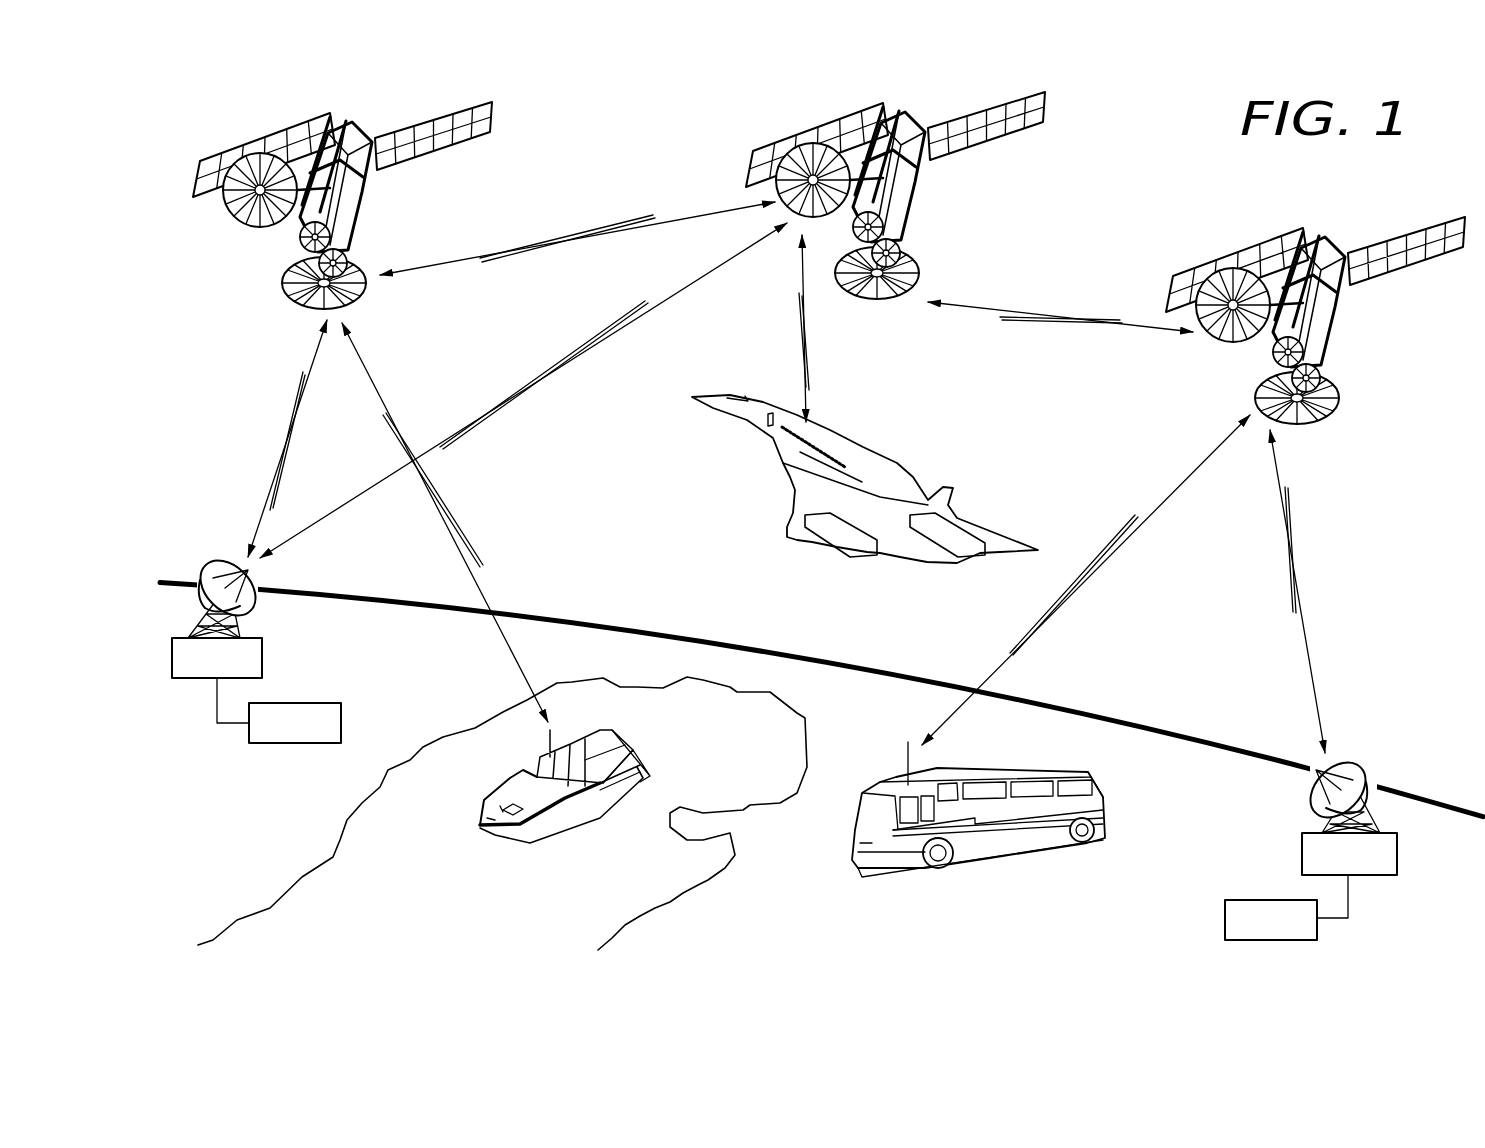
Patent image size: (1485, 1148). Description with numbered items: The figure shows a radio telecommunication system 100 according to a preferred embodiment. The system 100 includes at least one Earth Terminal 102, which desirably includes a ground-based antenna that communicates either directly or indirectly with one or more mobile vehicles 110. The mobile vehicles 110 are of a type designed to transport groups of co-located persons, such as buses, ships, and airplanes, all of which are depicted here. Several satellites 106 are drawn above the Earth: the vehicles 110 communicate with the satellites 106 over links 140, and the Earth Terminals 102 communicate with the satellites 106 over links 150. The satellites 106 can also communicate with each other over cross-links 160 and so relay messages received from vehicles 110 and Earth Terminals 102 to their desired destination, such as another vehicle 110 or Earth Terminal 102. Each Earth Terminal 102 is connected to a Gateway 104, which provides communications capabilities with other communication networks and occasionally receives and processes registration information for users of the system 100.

The radio telecommunication system 100 is at (1158, 215).
The Earth Terminal 102 is at (262, 655).
The Gateway 104 is at (341, 722).
The satellite 106 is at (343, 209).
The mobile vehicle 110 is at (762, 431).
The link 140 is at (458, 540).
The link 150 is at (287, 428).
The cross-link 160 is at (560, 245).